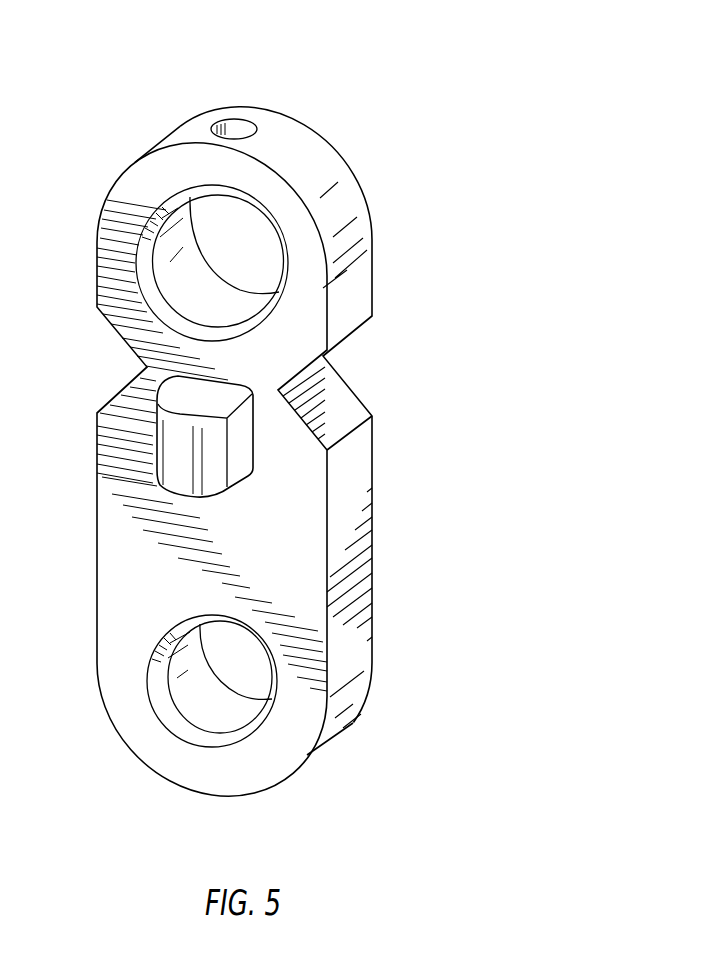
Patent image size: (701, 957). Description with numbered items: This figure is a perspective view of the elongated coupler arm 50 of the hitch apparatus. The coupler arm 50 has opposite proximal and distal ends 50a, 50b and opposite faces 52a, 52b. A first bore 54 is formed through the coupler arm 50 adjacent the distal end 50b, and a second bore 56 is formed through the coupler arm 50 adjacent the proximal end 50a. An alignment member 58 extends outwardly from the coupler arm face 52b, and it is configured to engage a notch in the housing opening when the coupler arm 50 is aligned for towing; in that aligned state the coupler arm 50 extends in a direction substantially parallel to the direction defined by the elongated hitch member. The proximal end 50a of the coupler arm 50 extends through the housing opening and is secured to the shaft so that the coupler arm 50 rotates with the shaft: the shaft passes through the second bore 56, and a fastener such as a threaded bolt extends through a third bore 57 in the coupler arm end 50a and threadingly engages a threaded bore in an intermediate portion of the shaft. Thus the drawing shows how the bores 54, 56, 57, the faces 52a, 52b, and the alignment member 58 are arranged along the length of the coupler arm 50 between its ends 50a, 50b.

The coupler arm 50 is at (340, 81).
The proximal end 50a is at (350, 198).
The distal end 50b is at (262, 765).
The face 52a is at (372, 443).
The face 52b is at (293, 521).
The first bore 54 is at (192, 696).
The second bore 56 is at (177, 278).
The third bore 57 is at (237, 124).
The alignment member 58 is at (183, 453).